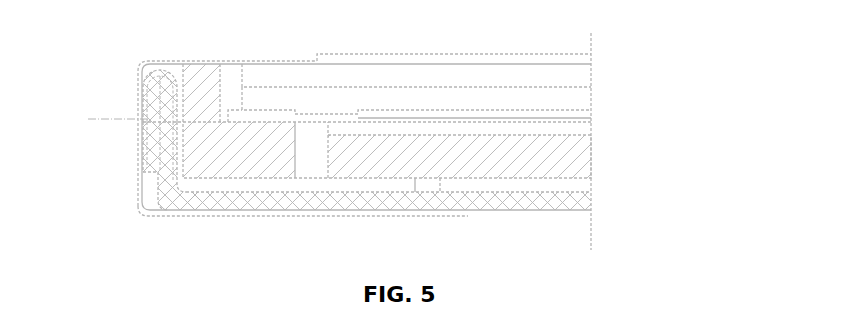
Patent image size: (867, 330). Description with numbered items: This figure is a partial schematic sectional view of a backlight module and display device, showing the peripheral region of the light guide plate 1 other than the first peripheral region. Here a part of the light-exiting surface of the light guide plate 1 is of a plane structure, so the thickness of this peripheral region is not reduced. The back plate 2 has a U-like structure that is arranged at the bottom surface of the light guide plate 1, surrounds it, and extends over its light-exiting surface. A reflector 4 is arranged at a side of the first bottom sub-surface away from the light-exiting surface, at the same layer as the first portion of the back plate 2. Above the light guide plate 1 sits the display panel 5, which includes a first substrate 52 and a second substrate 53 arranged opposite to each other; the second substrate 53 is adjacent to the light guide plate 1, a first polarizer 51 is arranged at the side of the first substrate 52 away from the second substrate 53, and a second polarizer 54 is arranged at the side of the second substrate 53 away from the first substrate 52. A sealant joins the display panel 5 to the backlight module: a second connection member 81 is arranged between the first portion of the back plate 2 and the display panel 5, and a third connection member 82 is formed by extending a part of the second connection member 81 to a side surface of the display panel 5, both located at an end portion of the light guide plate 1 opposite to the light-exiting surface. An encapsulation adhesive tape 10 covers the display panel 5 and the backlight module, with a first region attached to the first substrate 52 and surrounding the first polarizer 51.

The light guide plate 1 is at (592, 160).
The back plate 2 is at (143, 88).
The reflector 4 is at (512, 194).
The display panel 5 is at (699, 30).
The encapsulation adhesive tape 10 is at (193, 212).
The first polarizer 51 is at (594, 55).
The first substrate 52 is at (594, 73).
The second substrate 53 is at (594, 92).
The second polarizer 54 is at (594, 115).
The second connection member 81 is at (176, 137).
The third connection member 82 is at (176, 98).